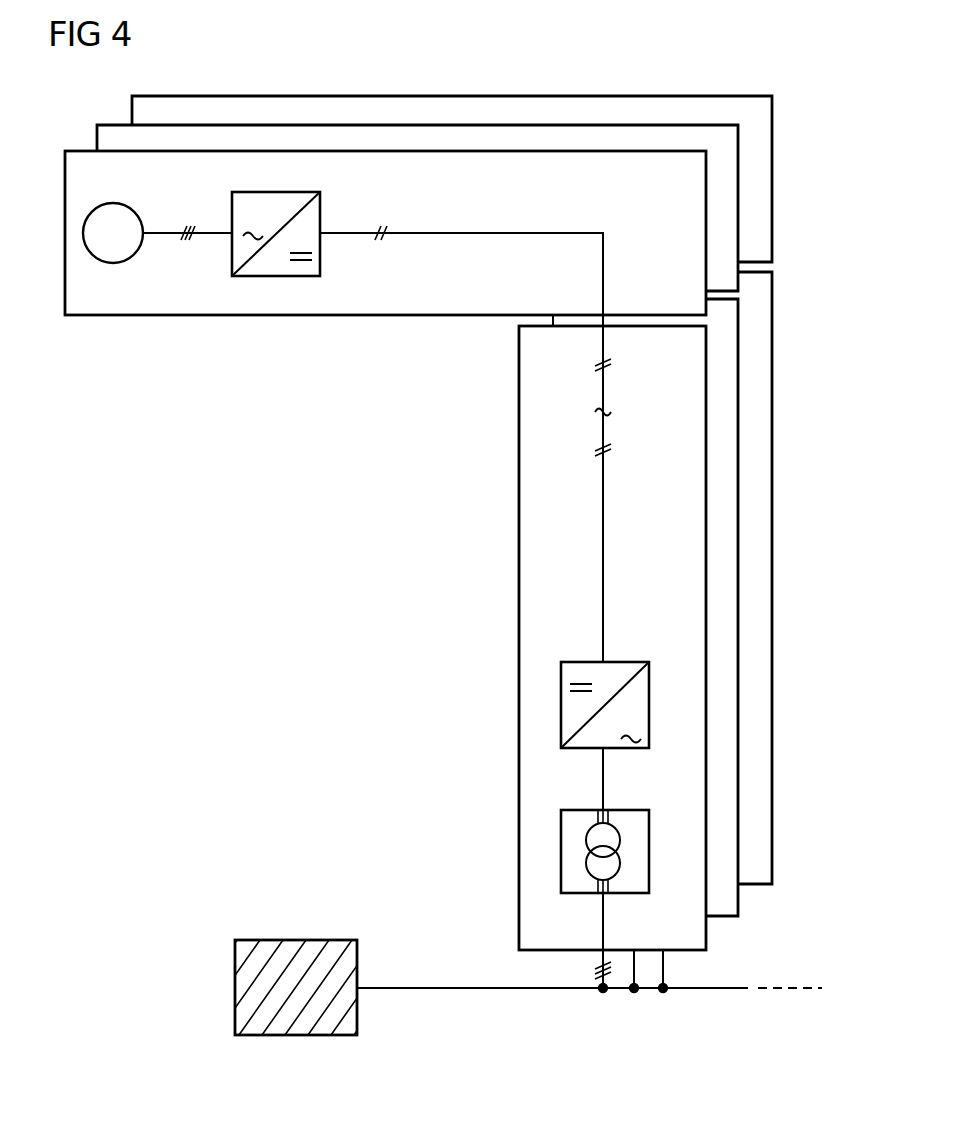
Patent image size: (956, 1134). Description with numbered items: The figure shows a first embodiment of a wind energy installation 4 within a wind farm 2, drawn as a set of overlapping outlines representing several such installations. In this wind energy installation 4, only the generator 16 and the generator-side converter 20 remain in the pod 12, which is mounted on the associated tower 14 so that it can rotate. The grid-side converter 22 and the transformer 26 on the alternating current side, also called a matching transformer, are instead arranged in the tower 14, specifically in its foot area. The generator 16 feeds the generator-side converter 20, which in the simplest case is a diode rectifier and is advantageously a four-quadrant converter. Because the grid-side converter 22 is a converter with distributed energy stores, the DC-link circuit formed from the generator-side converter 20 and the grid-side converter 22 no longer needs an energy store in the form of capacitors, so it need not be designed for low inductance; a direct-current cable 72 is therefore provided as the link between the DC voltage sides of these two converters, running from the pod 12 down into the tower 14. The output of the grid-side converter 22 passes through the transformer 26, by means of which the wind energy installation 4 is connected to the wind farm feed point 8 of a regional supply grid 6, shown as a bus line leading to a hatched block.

The wind farm 2 is at (346, 590).
The wind energy installation 4 is at (240, 150).
The regional supply grid 6 is at (327, 940).
The wind farm feed point 8 is at (645, 990).
The pod 12 is at (200, 315).
The tower 14 is at (519, 530).
The generator 16 is at (110, 263).
The generator-side converter 20 is at (287, 276).
The grid-side converter 22 is at (561, 716).
The transformer 26 is at (561, 855).
The direct-current cable 72 is at (603, 480).